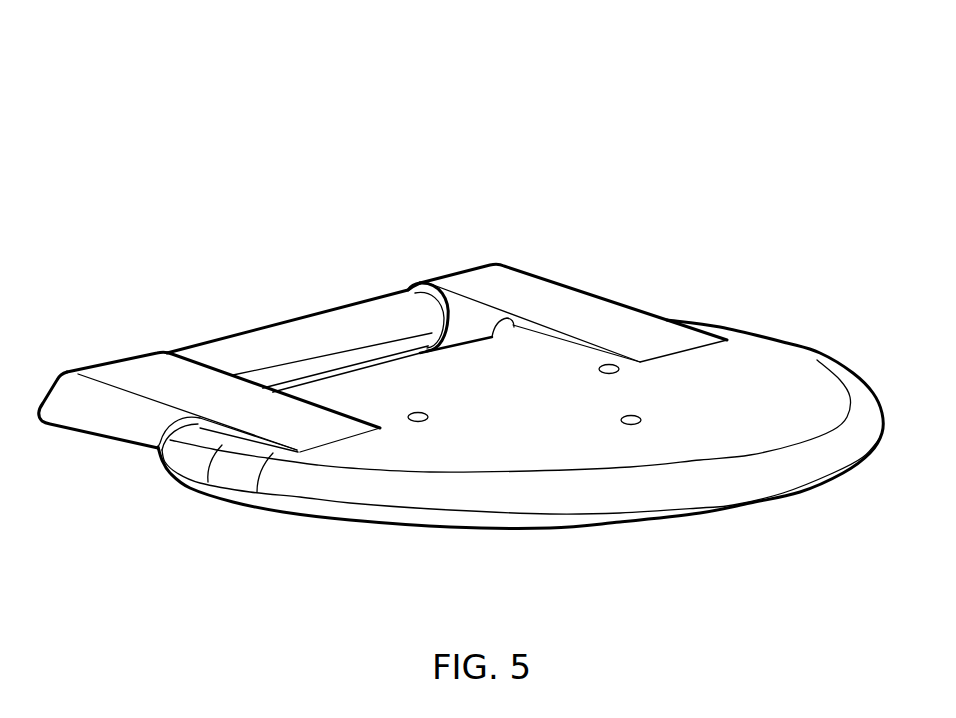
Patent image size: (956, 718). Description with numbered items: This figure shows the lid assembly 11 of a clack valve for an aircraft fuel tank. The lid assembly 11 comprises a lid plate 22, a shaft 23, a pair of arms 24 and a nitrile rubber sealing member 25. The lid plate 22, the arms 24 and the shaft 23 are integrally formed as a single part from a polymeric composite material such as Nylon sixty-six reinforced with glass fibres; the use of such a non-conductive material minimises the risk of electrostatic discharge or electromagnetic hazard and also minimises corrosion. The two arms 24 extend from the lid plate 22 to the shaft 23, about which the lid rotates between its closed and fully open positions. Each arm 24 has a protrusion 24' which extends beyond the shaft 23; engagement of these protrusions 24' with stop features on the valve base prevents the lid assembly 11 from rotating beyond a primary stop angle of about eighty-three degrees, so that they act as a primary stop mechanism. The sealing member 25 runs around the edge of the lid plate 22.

The lid assembly 11 is at (616, 107).
The lid plate 22 is at (783, 363).
The shaft 23 is at (315, 335).
The arms 24 is at (397, 367).
The protrusion 24' is at (234, 348).
The sealing member 25 is at (806, 488).